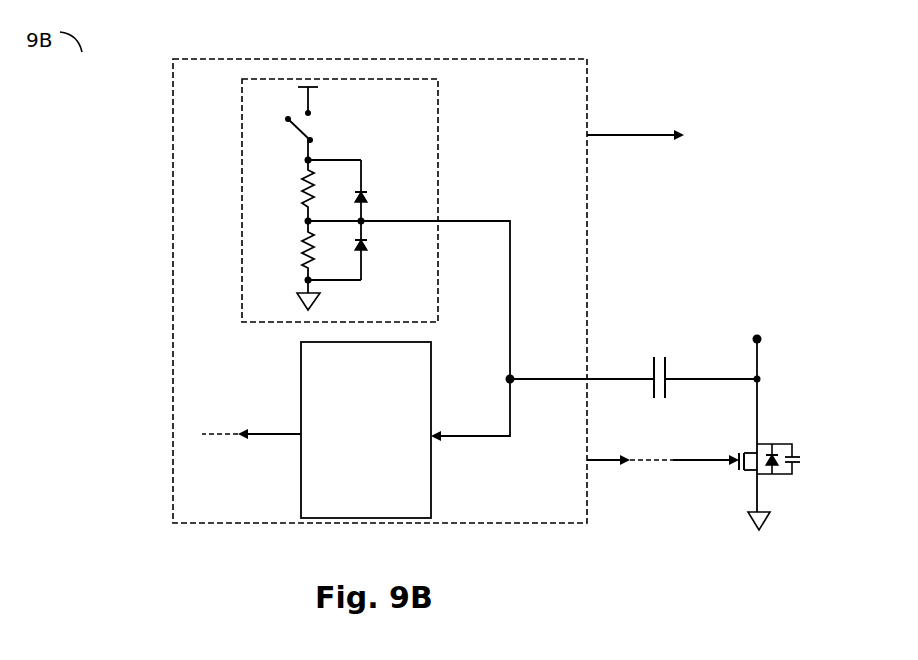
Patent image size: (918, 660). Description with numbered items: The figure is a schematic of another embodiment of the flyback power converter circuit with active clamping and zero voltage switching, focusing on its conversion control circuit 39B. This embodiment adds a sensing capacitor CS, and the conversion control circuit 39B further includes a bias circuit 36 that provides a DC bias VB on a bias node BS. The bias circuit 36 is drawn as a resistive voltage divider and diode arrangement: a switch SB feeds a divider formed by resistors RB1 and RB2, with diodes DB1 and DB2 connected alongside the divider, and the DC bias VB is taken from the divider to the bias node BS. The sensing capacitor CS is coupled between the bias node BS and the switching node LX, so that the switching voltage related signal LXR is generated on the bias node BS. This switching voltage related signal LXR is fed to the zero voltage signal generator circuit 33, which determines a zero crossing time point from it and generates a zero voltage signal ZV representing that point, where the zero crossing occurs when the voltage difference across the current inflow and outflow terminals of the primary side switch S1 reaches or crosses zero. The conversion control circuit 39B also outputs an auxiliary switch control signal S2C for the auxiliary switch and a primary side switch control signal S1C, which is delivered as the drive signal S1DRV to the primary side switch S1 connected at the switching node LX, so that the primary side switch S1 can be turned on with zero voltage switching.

The conversion control circuit 39B is at (554, 120).
The bias circuit 36 is at (280, 316).
The zero voltage signal generator circuit 33 is at (357, 510).
The switch SB is at (316, 123).
The resistor RB1 is at (284, 190).
The resistor RB2 is at (284, 250).
The diode DB1 is at (384, 192).
The diode DB2 is at (384, 248).
The DC bias VB is at (409, 286).
The bias node BS is at (566, 373).
The sensing capacitor CS is at (705, 366).
The switching voltage related signal LXR is at (470, 410).
The zero voltage signal ZV is at (251, 424).
The auxiliary switch control signal S2C is at (657, 135).
The primary side switch control signal S1C is at (630, 473).
The drive signal S1DRV is at (700, 452).
The switching node LX is at (764, 379).
The primary side switch S1 is at (765, 480).